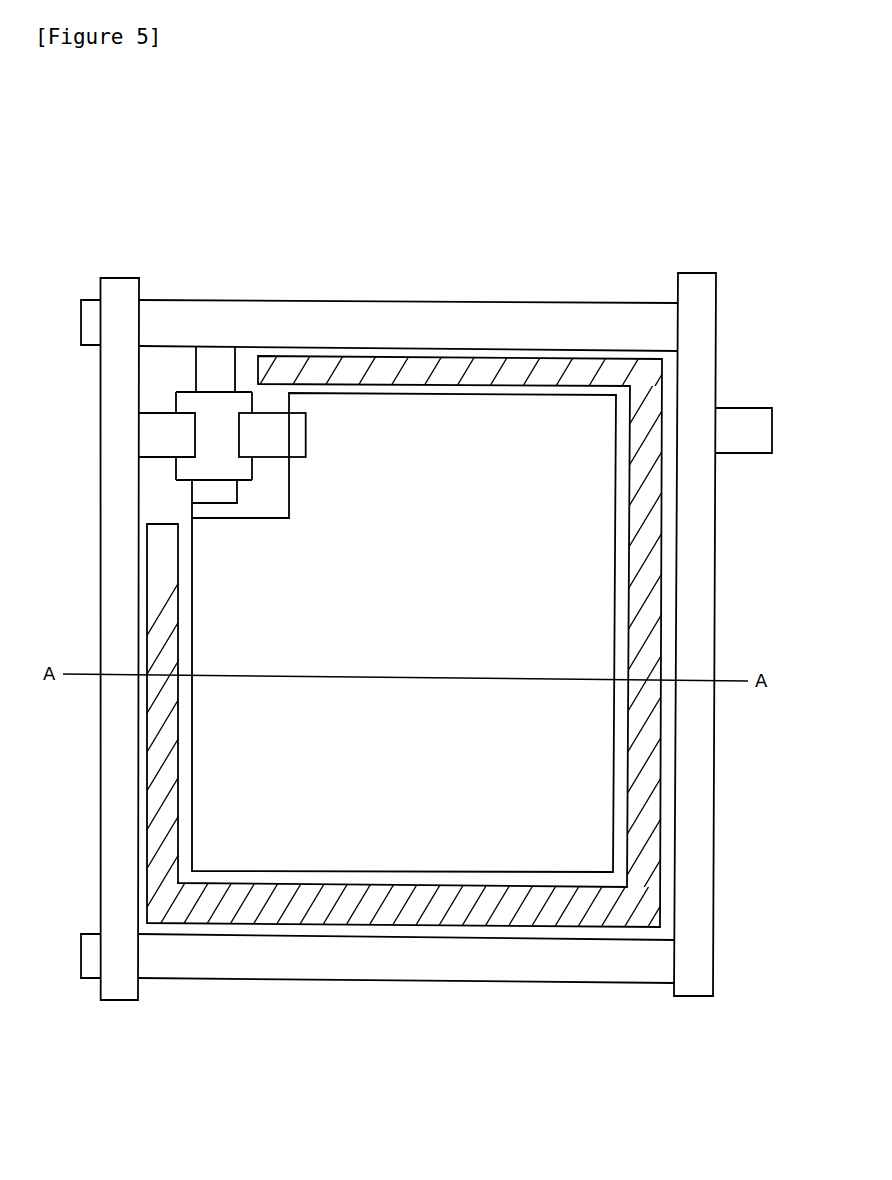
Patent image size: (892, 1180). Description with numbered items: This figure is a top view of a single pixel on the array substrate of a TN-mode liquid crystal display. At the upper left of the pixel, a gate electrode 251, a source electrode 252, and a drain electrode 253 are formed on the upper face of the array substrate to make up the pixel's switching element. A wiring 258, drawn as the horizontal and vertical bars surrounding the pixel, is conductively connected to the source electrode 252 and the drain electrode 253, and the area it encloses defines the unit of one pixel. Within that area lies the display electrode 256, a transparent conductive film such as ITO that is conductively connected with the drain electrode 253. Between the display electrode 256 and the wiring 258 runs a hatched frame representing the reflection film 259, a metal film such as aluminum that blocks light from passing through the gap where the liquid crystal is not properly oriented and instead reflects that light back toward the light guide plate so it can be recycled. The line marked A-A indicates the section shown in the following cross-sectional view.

The gate electrode 251 is at (214, 372).
The source electrode 252 is at (158, 437).
The drain electrode 253 is at (283, 436).
The display electrode 256 is at (498, 582).
The wiring 258 is at (415, 325).
The reflection film 259 is at (648, 563).